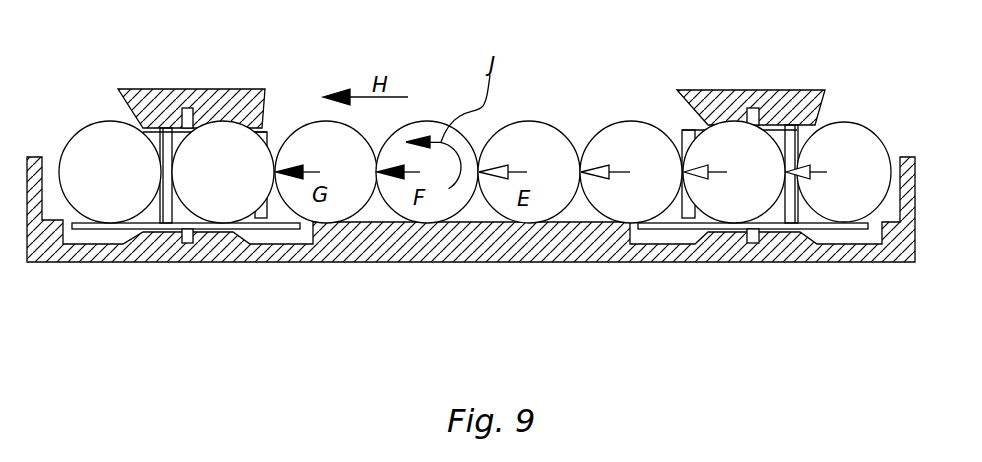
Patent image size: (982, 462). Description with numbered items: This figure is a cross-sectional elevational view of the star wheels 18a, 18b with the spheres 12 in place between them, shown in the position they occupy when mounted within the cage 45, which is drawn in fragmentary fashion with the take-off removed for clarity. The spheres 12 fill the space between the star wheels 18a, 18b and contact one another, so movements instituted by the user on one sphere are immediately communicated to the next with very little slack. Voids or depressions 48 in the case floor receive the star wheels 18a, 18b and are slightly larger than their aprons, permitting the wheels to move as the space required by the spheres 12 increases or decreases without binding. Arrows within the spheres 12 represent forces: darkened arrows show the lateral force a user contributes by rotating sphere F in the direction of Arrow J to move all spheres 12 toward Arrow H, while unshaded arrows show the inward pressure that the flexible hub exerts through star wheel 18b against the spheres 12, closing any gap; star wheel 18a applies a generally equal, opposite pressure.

The spheres 12 is at (613, 121).
The star wheel 18a is at (162, 124).
The star wheel 18b is at (794, 124).
The cage 45 is at (445, 262).
The void or depression 48 is at (70, 226).